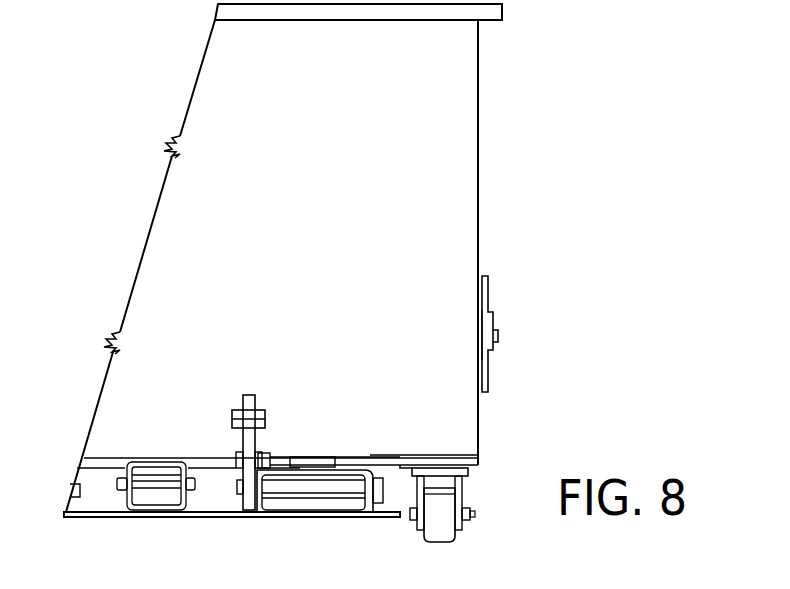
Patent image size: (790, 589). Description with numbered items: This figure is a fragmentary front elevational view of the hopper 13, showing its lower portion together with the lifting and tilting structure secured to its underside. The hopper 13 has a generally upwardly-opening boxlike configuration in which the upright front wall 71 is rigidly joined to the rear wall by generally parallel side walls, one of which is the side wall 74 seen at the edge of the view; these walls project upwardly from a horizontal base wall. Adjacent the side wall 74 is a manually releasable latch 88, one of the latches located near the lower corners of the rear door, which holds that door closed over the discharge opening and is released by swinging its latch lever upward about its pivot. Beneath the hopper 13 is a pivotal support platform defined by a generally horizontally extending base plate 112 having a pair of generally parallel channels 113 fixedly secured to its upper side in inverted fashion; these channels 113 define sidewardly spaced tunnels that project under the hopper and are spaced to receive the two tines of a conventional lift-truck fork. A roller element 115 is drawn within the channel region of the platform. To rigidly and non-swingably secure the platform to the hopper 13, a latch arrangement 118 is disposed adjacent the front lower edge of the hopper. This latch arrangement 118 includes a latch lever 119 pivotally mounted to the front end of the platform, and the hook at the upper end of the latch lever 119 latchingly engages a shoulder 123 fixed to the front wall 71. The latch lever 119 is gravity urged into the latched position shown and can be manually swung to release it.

The hopper 13 is at (480, 112).
The side wall 74 is at (478, 171).
The front wall 71 is at (382, 162).
The latch 88 is at (500, 323).
The base plate 112 is at (203, 519).
The latch arrangement 118 is at (263, 403).
The shoulder 123 is at (267, 414).
The latch lever 119 is at (244, 444).
The channel 113 is at (262, 494).
The roller 115 is at (318, 488).